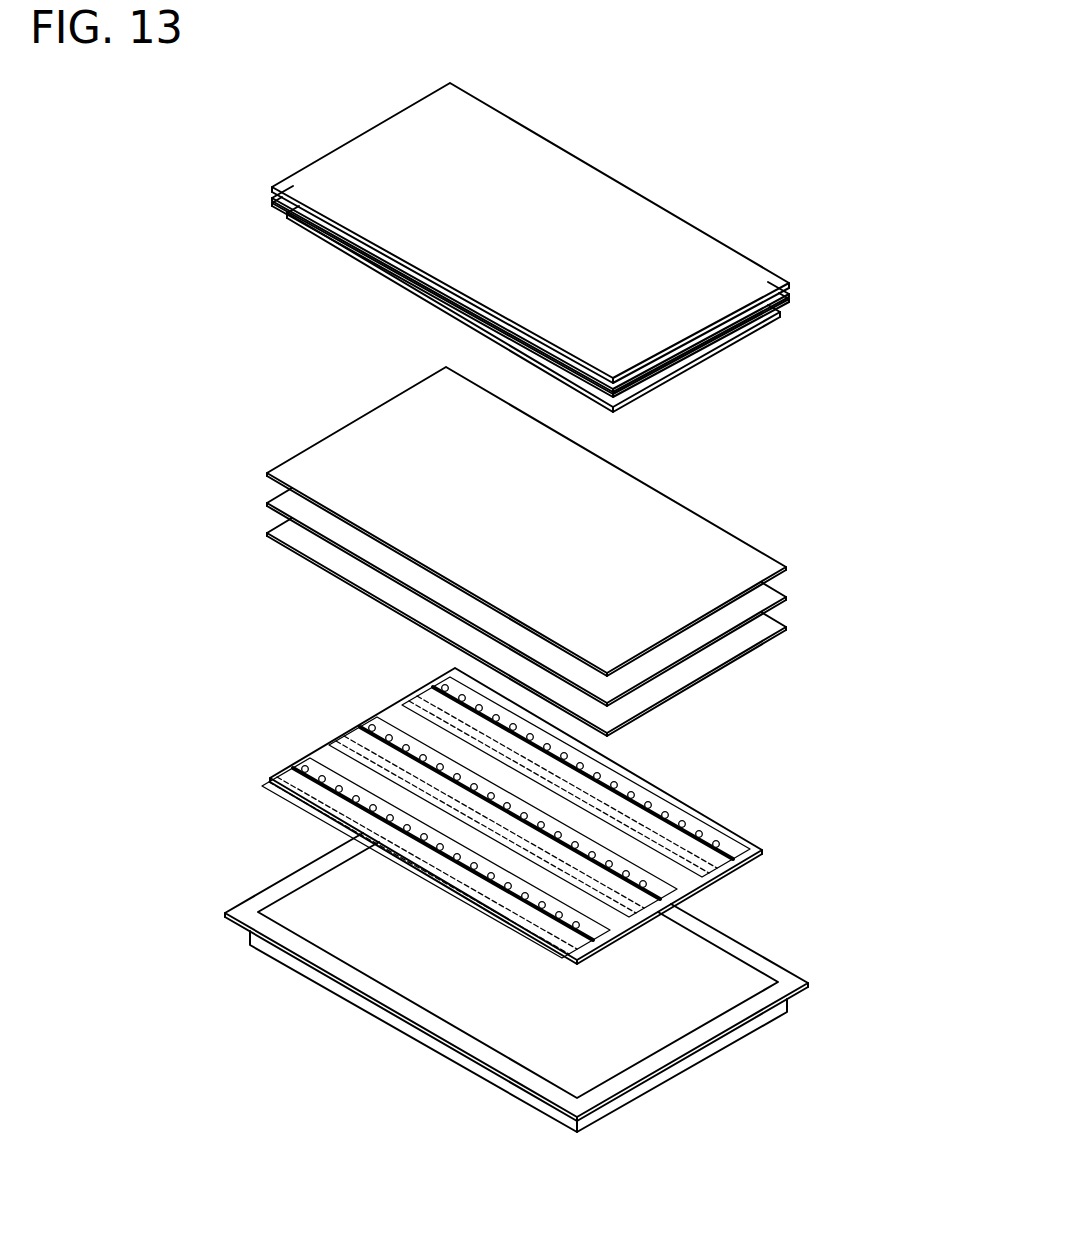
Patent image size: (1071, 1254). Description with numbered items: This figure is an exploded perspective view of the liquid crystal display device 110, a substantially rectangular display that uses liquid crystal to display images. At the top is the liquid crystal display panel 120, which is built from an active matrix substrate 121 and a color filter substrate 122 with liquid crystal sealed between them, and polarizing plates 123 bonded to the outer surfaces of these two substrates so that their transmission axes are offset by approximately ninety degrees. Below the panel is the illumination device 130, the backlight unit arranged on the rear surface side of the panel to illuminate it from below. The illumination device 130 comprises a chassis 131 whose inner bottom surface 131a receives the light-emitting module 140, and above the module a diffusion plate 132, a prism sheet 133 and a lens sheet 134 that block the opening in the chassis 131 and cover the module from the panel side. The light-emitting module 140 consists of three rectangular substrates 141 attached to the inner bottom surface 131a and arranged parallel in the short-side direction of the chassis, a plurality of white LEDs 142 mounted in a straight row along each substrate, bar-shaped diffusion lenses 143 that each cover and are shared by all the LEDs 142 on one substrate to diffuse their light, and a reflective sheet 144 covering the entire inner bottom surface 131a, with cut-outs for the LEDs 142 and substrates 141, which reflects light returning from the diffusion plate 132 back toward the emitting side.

The liquid crystal display device 110 is at (764, 137).
The liquid crystal display panel 120 is at (178, 102).
The active matrix substrate 121 is at (269, 199).
The color filter substrate 122 is at (270, 193).
The polarizing plates 123 is at (318, 170).
The illumination device 130 is at (176, 447).
The chassis 131 is at (249, 968).
The inner bottom surface 131a is at (350, 952).
The diffusion plate 132 is at (265, 533).
The prism sheet 133 is at (265, 503).
The lens sheet 134 is at (265, 473).
The light-emitting module 140 is at (237, 660).
The substrates 141 is at (292, 778).
The LEDs 142 is at (305, 763).
The diffusion lenses 143 is at (360, 728).
The reflective sheet 144 is at (320, 807).